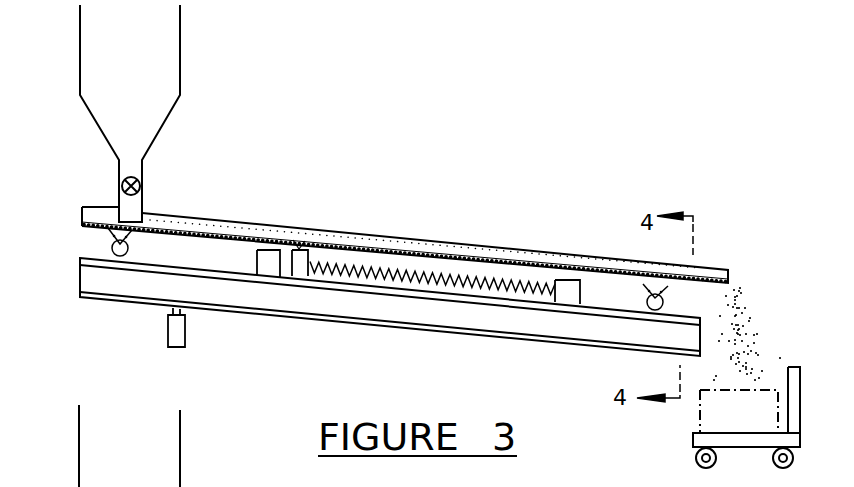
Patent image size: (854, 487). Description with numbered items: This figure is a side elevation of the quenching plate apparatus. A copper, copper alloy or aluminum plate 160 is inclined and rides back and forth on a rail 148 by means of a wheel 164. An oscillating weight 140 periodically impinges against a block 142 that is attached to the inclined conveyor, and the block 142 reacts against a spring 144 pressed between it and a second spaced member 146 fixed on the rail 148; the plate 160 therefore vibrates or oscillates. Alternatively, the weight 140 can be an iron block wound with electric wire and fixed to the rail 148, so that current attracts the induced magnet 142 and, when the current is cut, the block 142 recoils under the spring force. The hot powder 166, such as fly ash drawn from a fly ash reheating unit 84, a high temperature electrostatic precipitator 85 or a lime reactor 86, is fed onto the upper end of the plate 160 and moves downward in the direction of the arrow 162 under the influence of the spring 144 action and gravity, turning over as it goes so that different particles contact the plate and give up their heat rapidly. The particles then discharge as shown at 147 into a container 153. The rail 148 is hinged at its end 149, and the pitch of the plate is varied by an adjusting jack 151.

The arrow 162 is at (72, 213).
The powder 166 is at (150, 223).
The block 142 is at (300, 248).
The plate 160 is at (378, 247).
The spring 144 is at (440, 258).
The second spaced member 146 is at (566, 290).
The end 149 is at (688, 362).
The discharge 147 is at (748, 345).
The adjusting jack 151 is at (167, 328).
The oscillating weight 140 is at (267, 263).
The rail 148 is at (380, 307).
The wheel 164 is at (652, 312).
The container 153 is at (713, 412).
The fly ash reheating unit 84 is at (78, 416).
The high temperature electrostatic precipitator 85 is at (97, 458).
The lime reactor 86 is at (97, 473).